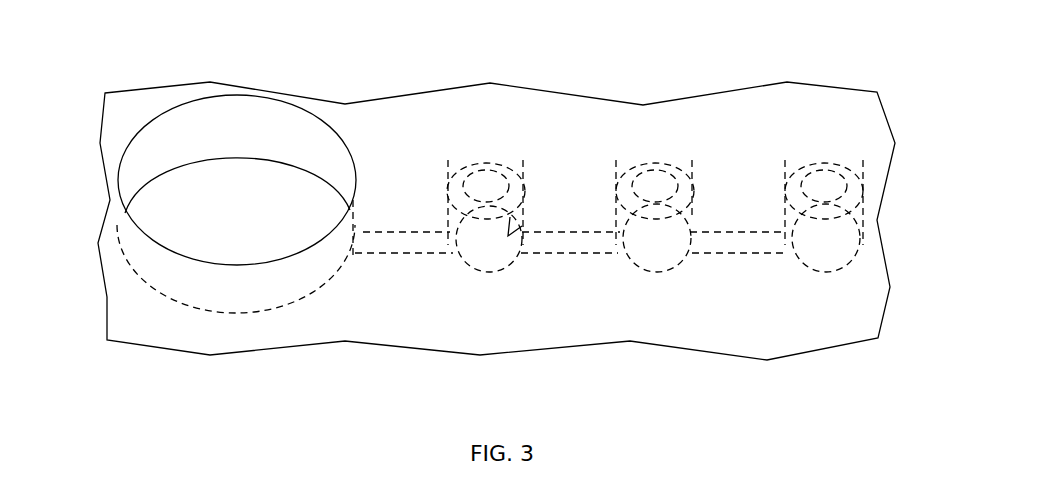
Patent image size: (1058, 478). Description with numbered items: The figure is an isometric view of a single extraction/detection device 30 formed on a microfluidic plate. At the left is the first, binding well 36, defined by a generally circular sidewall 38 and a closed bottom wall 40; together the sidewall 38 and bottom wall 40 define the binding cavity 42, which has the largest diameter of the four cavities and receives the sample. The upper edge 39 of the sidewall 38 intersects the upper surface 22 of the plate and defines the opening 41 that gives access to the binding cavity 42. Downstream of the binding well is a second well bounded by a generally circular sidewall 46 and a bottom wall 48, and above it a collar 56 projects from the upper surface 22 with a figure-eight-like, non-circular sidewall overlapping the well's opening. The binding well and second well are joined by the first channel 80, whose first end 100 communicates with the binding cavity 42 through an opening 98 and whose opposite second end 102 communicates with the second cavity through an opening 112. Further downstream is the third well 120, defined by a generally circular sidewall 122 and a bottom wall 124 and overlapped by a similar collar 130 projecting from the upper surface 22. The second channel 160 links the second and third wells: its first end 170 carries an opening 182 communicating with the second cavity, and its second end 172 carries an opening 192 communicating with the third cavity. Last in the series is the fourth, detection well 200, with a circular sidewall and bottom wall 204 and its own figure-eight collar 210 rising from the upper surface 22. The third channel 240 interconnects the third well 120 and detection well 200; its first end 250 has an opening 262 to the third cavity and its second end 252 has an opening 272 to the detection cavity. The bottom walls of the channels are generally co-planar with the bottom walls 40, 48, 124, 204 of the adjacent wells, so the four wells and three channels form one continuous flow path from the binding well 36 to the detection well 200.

The extraction/detection device 30 is at (168, 82).
The binding well 36 is at (250, 150).
The sidewall 38 is at (283, 134).
The upper edge 39 is at (321, 115).
The bottom wall 40 is at (222, 207).
The opening 41 is at (273, 267).
The binding cavity 42 is at (160, 197).
The opening 98 is at (358, 229).
The first channel 80 is at (388, 230).
The upper surface 22 is at (570, 195).
The collar 56 is at (487, 161).
The opening 112 is at (447, 252).
The sidewall 46 is at (520, 228).
The bottom wall 48 is at (487, 258).
The first end 170 is at (525, 266).
The opening 182 is at (529, 249).
The first end 100 is at (357, 262).
The second end 102 is at (450, 259).
The second channel 160 is at (588, 231).
The collar 130 is at (666, 162).
The sidewall 122 is at (692, 224).
The third well 120 is at (654, 258).
The bottom wall 124 is at (668, 258).
The first end 250 is at (694, 267).
The opening 192 is at (614, 247).
The second end 172 is at (618, 263).
The opening 262 is at (698, 244).
The third channel 240 is at (745, 230).
The collar 210 is at (834, 161).
The detection well 200 is at (837, 275).
The bottom wall 204 is at (847, 253).
The second end 252 is at (784, 264).
The opening 272 is at (779, 248).